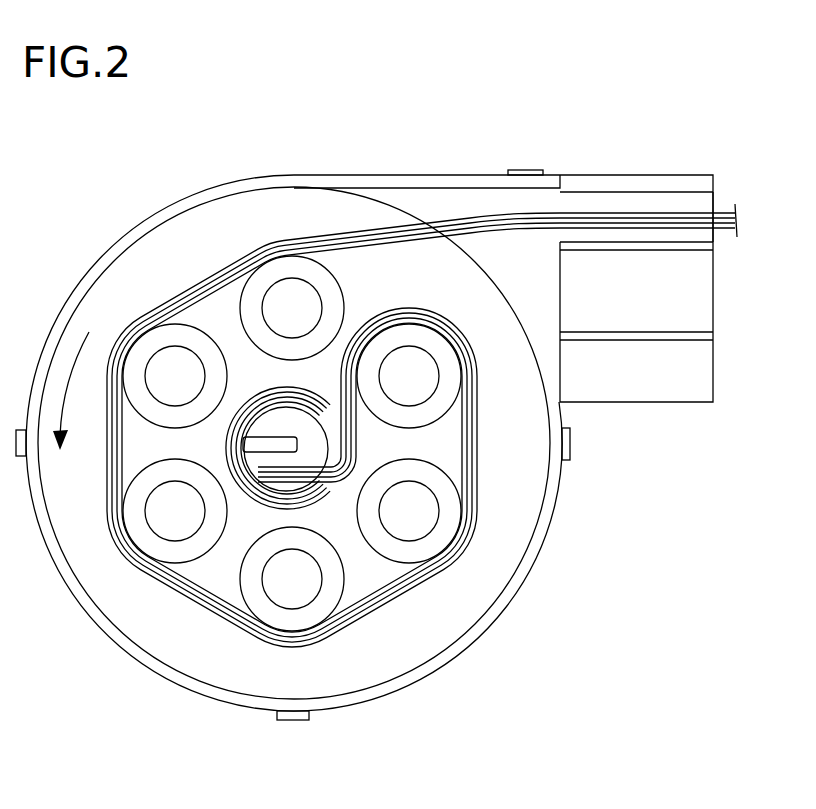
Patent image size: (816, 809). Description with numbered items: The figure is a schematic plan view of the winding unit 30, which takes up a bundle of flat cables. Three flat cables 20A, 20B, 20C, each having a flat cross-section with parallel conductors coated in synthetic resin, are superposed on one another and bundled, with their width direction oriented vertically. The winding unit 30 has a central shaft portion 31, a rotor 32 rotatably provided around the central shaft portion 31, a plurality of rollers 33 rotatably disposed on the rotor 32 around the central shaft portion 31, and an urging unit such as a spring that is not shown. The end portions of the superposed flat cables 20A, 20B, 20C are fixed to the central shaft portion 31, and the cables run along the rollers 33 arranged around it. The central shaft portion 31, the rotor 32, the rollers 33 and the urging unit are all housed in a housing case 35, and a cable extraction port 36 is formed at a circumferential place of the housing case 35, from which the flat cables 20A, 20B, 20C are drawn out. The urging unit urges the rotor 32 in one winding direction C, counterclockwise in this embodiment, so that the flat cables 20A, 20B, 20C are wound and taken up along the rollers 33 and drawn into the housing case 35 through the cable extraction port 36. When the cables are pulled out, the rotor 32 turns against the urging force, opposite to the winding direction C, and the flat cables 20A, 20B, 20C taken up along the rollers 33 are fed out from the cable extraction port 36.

The winding unit 30 is at (145, 196).
The central shaft portion 31 is at (302, 453).
The rotor 32 is at (453, 626).
The rollers 33 is at (193, 342).
The housing case 35 is at (202, 699).
The cable extraction port 36 is at (715, 233).
The flat cable 20A is at (583, 213).
The flat cable 20B is at (628, 220).
The flat cable 20C is at (663, 233).
The winding direction C is at (67, 391).